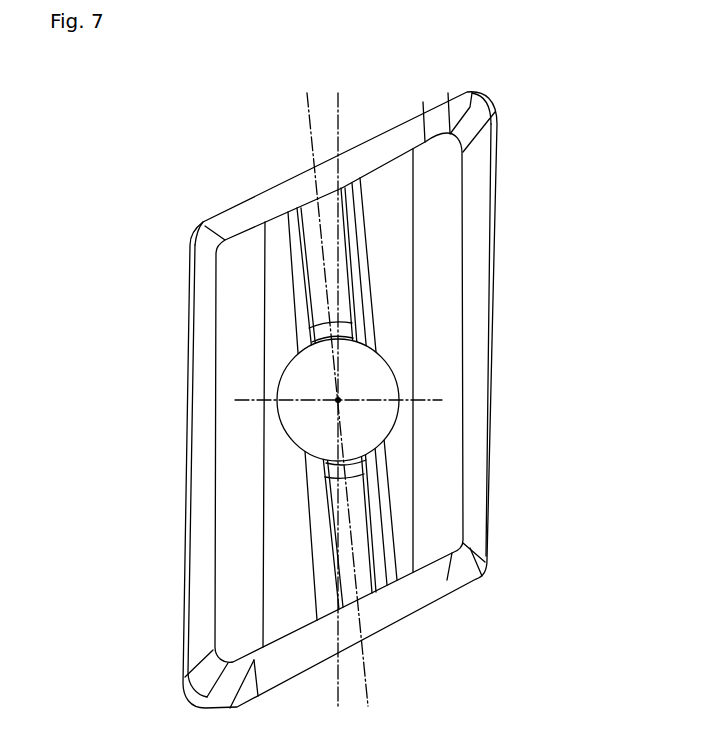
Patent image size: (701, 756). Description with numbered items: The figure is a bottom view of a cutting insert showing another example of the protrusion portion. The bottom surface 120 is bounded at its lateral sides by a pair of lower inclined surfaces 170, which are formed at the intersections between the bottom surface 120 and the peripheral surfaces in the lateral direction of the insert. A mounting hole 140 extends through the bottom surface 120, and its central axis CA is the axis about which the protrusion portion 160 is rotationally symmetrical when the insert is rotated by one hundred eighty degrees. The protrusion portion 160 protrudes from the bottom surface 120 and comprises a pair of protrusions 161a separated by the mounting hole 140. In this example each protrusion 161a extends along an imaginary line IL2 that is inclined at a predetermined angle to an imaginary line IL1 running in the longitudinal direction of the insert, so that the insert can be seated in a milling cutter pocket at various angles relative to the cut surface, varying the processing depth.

The bottom surface 120 is at (388, 182).
The lower inclined surfaces 170 is at (437, 228).
The mounting hole 140 is at (364, 378).
The protrusion portion 160 is at (102, 388).
The protrusion 161a is at (318, 298).
The central axis CA is at (338, 411).
The imaginary line IL1 is at (342, 389).
The imaginary line IL2 is at (332, 389).